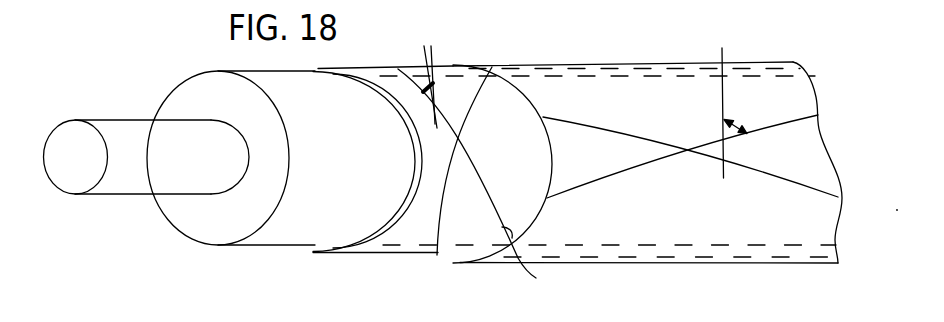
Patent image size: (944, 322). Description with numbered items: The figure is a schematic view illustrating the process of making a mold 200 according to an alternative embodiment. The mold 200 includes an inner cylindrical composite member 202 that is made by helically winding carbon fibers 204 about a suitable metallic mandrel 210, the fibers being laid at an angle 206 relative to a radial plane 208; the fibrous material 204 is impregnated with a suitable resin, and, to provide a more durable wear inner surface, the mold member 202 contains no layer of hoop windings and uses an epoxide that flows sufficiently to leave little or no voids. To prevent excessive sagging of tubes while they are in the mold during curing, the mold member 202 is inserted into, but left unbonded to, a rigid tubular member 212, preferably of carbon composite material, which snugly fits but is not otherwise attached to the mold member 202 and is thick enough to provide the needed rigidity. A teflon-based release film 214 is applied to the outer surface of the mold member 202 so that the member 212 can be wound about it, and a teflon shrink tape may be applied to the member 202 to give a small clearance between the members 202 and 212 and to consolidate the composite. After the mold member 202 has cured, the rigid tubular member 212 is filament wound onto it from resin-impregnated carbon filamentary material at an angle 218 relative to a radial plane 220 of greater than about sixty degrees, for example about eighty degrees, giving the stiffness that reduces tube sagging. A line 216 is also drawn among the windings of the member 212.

The mold 200 is at (740, 56).
The inner cylindrical composite member 202 is at (377, 66).
The carbon fibers 204 is at (439, 229).
The angle 206 is at (438, 73).
The radial plane 208 is at (433, 61).
The metallic mandrel 210 is at (190, 97).
The rigid tubular member 212 is at (628, 62).
The release film 214 is at (470, 263).
The braid strand crossing lines 216 is at (795, 122).
The angle 218 is at (742, 125).
The radial plane 220 is at (722, 48).